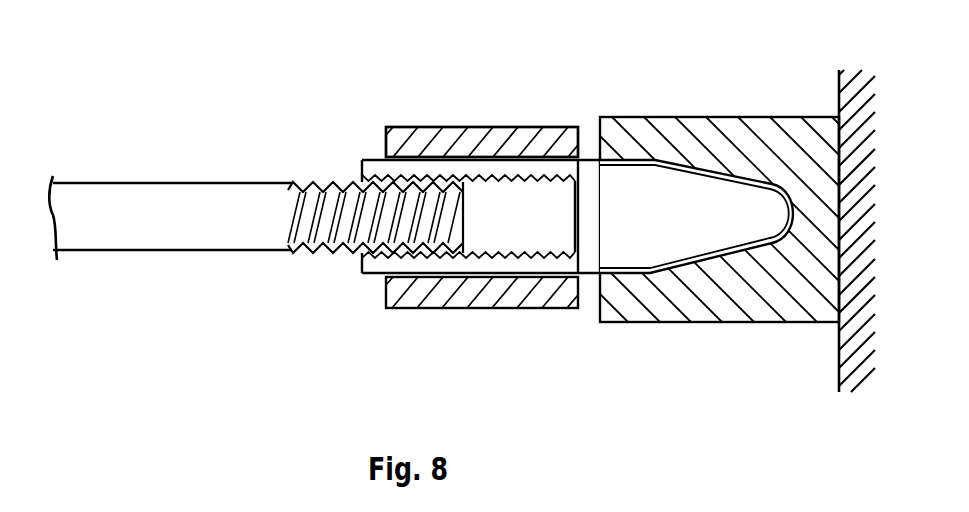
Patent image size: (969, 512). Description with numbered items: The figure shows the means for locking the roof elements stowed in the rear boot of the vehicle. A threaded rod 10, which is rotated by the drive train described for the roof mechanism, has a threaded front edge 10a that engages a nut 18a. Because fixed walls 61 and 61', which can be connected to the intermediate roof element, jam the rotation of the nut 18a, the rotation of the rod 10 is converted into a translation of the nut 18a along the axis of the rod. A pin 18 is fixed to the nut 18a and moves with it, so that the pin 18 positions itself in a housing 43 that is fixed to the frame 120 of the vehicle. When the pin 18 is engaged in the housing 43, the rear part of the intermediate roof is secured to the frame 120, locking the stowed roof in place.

The threaded rod 10 is at (156, 204).
The front edge of the threaded rod 10a is at (337, 182).
The fixed wall 61 is at (482, 269).
The fixed wall 61' is at (475, 90).
The nut 18a is at (583, 175).
The pin 18 is at (648, 193).
The housing 43 is at (772, 312).
The frame 120 is at (806, 99).